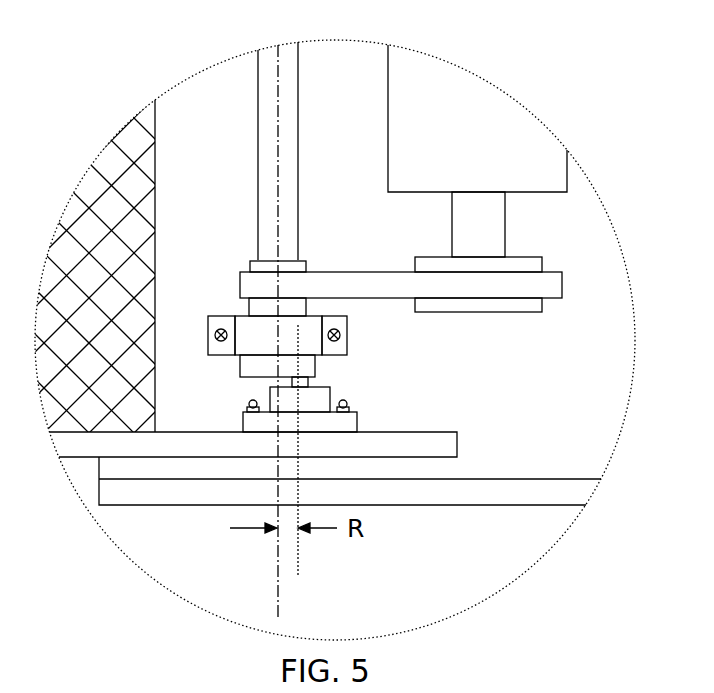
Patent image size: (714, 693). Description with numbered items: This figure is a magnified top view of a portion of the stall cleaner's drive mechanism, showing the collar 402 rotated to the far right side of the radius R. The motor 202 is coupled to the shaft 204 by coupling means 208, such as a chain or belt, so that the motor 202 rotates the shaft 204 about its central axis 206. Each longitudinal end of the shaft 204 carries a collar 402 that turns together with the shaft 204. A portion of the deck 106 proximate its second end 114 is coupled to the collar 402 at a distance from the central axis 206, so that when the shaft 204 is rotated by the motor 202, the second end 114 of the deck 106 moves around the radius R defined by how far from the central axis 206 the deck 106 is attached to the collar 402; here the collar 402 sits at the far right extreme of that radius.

The deck 106 is at (153, 283).
The second end 114 is at (160, 179).
The motor 202 is at (532, 193).
The shaft 204 is at (292, 167).
The central axis 206 is at (278, 560).
The coupling means 208 is at (328, 271).
The collar 402 is at (325, 392).